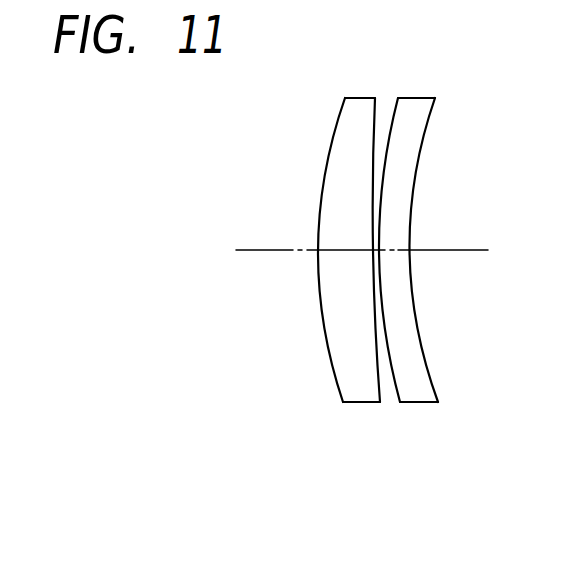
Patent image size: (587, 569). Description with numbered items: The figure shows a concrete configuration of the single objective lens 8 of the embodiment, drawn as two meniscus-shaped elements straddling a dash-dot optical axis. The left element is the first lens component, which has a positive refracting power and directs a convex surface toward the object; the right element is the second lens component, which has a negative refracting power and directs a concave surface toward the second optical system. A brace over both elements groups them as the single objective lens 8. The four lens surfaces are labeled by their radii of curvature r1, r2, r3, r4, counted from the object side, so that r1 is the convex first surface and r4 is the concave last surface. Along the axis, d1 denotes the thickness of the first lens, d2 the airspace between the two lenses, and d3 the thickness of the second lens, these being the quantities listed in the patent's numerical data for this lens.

The single objective lens 8 is at (307, 63).
The radius of curvature of first lens surface r1 is at (338, 123).
The radius of curvature of second lens surface r2 is at (377, 116).
The radius of curvature of third lens surface r3 is at (395, 108).
The radius of curvature of fourth lens surface r4 is at (436, 104).
The thickness of first lens d1 is at (348, 255).
The airspace between lenses d2 is at (373, 250).
The thickness of second lens d3 is at (398, 252).